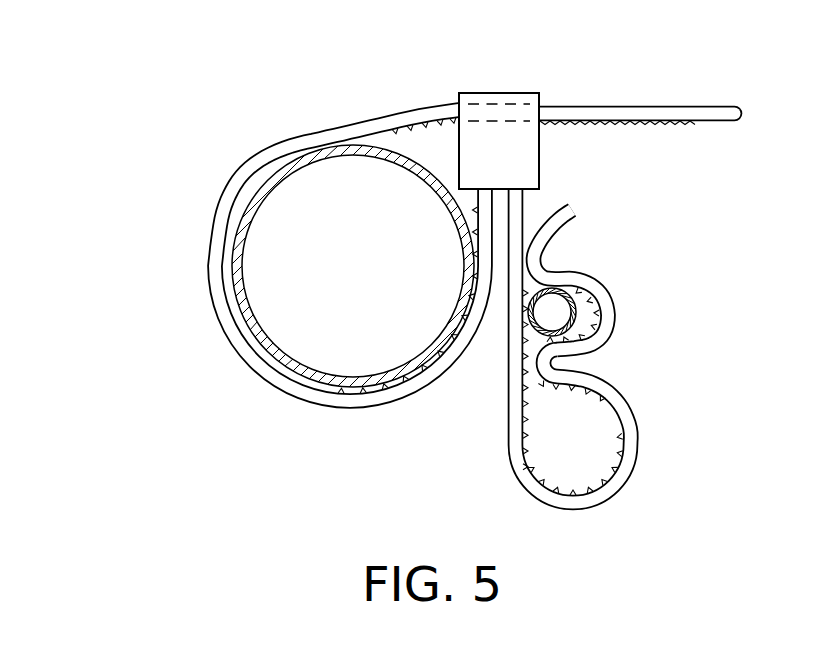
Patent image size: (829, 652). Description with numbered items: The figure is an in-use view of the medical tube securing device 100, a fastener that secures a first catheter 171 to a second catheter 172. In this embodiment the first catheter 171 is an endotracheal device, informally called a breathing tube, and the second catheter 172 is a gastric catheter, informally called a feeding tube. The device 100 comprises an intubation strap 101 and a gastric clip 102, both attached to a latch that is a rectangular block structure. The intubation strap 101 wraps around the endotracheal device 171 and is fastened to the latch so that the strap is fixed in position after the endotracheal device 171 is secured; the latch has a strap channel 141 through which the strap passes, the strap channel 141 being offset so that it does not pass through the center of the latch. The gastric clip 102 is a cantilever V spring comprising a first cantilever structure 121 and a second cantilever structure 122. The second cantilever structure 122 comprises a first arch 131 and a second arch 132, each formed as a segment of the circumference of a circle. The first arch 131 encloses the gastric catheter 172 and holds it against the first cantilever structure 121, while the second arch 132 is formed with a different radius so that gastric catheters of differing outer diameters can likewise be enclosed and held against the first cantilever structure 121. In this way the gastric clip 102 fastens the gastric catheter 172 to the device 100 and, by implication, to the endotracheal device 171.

The medical tube securing device 100 is at (150, 90).
The intubation strap 101 is at (623, 106).
The gastric clip 102 is at (640, 454).
The first cantilever structure 121 is at (508, 400).
The second cantilever structure 122 is at (607, 283).
The first arch 131 is at (599, 334).
The second arch 132 is at (640, 408).
The strap channel 141 is at (501, 112).
The first catheter 171 is at (316, 384).
The gastric catheter 172 is at (574, 318).